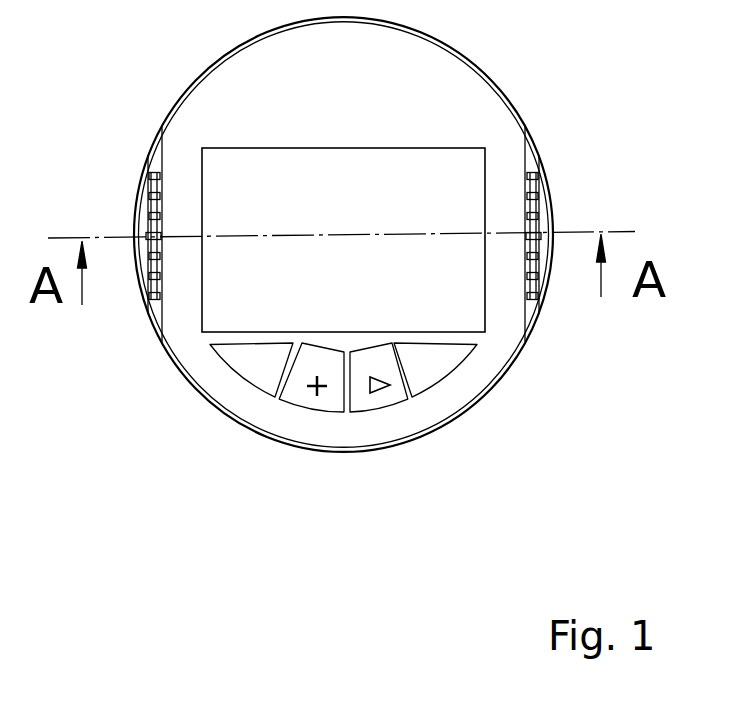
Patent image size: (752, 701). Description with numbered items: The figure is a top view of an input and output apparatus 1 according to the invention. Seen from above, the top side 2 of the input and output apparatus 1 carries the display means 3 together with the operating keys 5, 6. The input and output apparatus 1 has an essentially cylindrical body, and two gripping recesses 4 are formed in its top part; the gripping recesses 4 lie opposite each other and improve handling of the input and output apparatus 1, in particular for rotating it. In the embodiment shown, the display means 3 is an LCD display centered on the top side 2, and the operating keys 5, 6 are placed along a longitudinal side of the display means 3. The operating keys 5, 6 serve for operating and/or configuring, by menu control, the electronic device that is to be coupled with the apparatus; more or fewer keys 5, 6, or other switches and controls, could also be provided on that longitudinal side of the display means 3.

The input and output apparatus 1 is at (512, 86).
The top side 2 is at (228, 98).
The display means 3 is at (212, 320).
The gripping recesses 4 is at (150, 285).
The operating keys 5 is at (305, 398).
The operating keys 6 is at (388, 398).